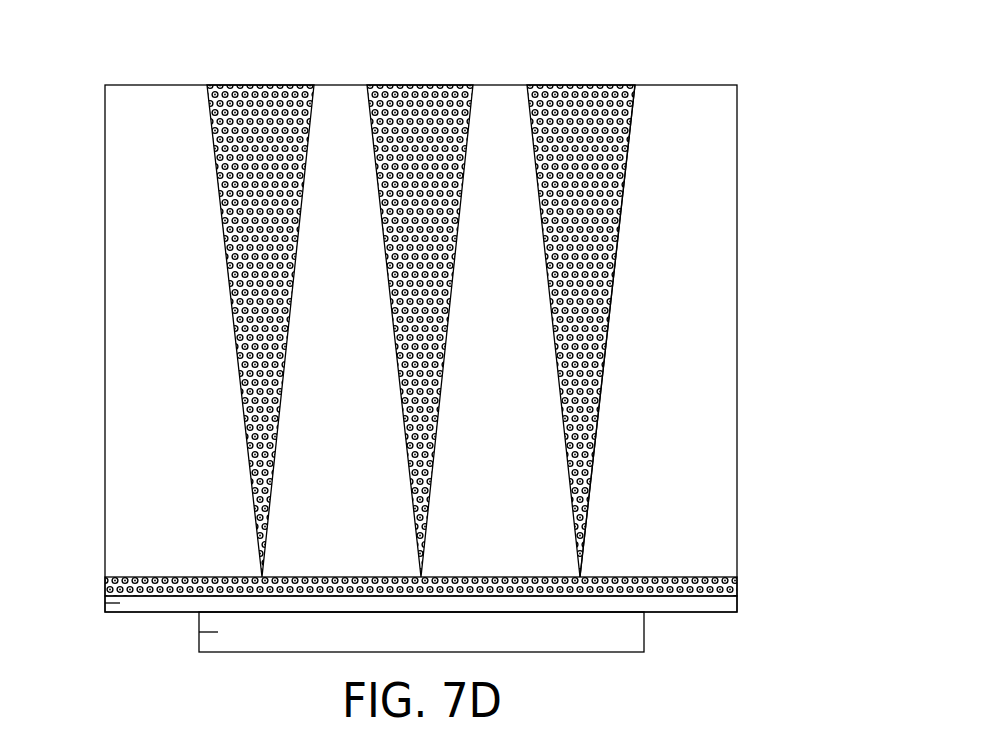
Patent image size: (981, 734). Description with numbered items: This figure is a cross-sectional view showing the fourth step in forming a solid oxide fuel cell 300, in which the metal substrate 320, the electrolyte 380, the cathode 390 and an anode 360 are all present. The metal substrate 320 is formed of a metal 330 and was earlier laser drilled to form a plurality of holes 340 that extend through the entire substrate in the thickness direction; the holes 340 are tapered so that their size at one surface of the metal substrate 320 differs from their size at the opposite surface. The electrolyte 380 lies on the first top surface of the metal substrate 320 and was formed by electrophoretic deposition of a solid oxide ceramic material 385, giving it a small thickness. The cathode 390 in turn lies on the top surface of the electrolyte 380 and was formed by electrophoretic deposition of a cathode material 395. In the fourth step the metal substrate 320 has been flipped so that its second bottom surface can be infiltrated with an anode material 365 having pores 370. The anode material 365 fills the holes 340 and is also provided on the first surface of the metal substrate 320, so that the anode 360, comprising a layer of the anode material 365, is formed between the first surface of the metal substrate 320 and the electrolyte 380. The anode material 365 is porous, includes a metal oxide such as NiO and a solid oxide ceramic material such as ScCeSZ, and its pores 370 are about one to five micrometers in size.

The solid oxide fuel cell 300 is at (103, 65).
The metal substrate 320 is at (737, 196).
The metal 330 is at (685, 337).
The holes 340 is at (602, 386).
The anode 360 is at (737, 585).
The anode material 365 is at (619, 227).
The pores 370 is at (627, 150).
The electrolyte 380 is at (737, 603).
The solid oxide ceramic material 385 is at (105, 603).
The cathode 390 is at (644, 632).
The cathode material 395 is at (218, 632).